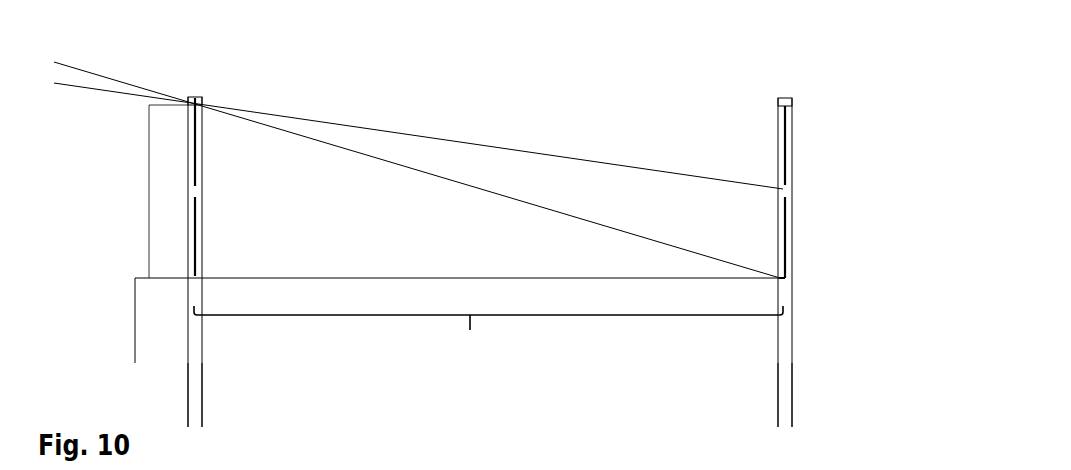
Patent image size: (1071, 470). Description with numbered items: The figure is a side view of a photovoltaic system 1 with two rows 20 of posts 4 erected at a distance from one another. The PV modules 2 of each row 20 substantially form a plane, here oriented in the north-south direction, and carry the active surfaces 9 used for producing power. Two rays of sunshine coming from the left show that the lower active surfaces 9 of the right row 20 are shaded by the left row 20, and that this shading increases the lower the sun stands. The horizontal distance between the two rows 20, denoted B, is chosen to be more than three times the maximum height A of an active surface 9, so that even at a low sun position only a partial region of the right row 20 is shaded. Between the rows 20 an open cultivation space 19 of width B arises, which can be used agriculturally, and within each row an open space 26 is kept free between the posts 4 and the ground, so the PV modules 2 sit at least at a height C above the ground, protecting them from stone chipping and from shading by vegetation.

The photovoltaic system 1 is at (471, 98).
The PV modules 2 is at (789, 124).
The posts 4 is at (194, 352).
The active surface 9 is at (196, 168).
The open cultivation space 19 is at (488, 337).
The rows 20 is at (193, 99).
The open space 26 is at (134, 302).